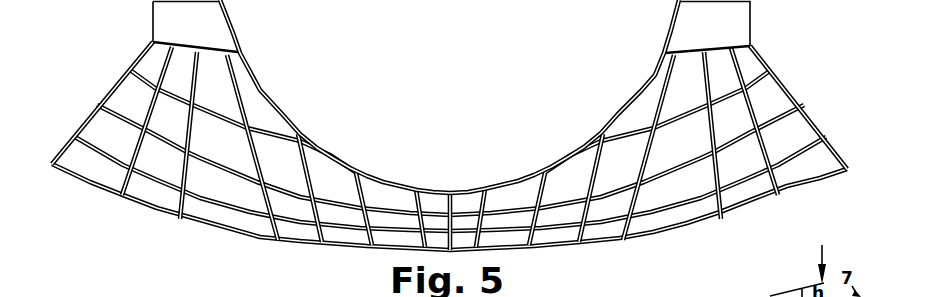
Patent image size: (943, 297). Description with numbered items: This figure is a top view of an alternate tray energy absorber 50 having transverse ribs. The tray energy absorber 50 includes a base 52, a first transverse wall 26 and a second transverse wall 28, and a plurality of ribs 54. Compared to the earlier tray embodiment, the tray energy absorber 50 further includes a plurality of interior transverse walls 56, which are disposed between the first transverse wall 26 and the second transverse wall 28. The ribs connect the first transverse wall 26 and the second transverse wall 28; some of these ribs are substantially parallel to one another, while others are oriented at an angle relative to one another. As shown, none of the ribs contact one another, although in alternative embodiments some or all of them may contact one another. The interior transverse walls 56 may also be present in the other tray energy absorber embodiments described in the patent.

The tray energy absorber 50 is at (100, 57).
The base 52 is at (116, 138).
The second transverse wall 28 is at (513, 178).
The first transverse wall 26 is at (637, 240).
The ribs 54 is at (713, 130).
The interior transverse walls 56 is at (802, 160).